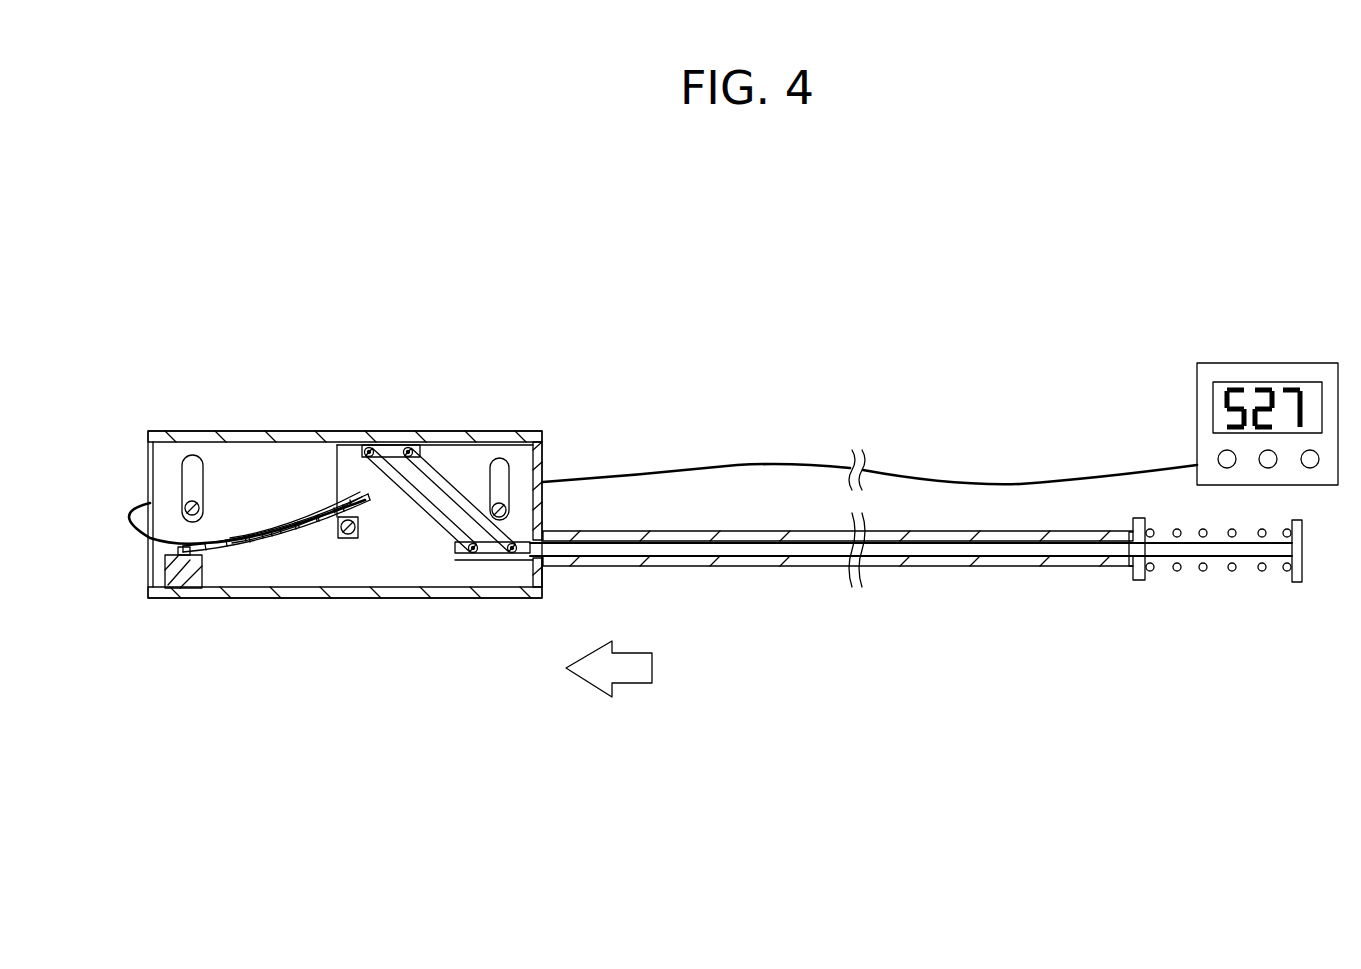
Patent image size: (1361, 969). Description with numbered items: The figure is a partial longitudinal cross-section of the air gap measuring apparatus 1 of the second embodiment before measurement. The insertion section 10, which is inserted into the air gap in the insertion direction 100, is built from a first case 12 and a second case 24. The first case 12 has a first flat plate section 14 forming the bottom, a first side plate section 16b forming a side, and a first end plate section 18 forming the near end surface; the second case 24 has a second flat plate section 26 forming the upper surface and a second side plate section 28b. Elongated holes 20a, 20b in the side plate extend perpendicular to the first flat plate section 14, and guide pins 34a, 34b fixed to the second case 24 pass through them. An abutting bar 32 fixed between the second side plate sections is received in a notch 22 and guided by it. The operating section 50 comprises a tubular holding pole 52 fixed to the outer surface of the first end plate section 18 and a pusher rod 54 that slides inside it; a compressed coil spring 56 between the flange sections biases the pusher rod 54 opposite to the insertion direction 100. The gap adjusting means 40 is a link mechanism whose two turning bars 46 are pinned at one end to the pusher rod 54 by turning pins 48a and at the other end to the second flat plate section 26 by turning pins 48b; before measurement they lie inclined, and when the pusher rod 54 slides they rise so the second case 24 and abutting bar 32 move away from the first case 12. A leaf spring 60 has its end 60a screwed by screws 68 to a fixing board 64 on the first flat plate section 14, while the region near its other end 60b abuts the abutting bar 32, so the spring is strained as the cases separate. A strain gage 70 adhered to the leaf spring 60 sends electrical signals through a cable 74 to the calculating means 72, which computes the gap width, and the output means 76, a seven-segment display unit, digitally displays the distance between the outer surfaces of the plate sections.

The air gap measuring apparatus 1 is at (682, 252).
The insertion section 10 is at (210, 335).
The first case 12 is at (257, 632).
The first flat plate section 14 is at (313, 598).
The first side plate section 16b is at (500, 570).
The first end plate section 18 is at (543, 575).
The elongated hole 20a is at (187, 455).
The elongated hole 20b is at (512, 480).
The notch 22 is at (347, 480).
The second case 24 is at (256, 410).
The second flat plate section 26 is at (515, 437).
The second side plate section 28b is at (350, 490).
The abutting bar 32 is at (352, 540).
The guide pin 34a is at (188, 503).
The guide pin 34b is at (545, 507).
The gap adjusting means 40 is at (441, 555).
The turning bar 46 is at (412, 492).
The turning pin 48a is at (473, 555).
The turning pin 48b is at (367, 447).
The operating section 50 is at (940, 617).
The holding pole 52 is at (925, 566).
The pusher rod 54 is at (1000, 556).
The coil spring 56 is at (1203, 571).
The leaf spring 60 is at (240, 590).
The end of leaf spring 60a is at (187, 553).
The other end of leaf spring 60b is at (357, 495).
The fixing board 64 is at (190, 588).
The screw 68 is at (178, 548).
The strain gage 70 is at (270, 533).
The calculating means 72 is at (1308, 497).
The cable 74 is at (120, 513).
The output means 76 is at (1272, 382).
The insertion direction 100 is at (635, 683).